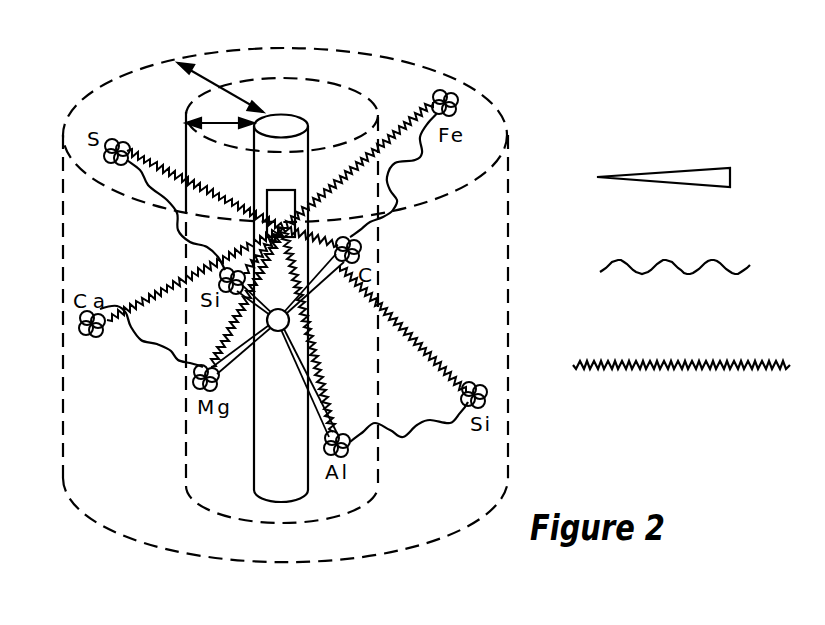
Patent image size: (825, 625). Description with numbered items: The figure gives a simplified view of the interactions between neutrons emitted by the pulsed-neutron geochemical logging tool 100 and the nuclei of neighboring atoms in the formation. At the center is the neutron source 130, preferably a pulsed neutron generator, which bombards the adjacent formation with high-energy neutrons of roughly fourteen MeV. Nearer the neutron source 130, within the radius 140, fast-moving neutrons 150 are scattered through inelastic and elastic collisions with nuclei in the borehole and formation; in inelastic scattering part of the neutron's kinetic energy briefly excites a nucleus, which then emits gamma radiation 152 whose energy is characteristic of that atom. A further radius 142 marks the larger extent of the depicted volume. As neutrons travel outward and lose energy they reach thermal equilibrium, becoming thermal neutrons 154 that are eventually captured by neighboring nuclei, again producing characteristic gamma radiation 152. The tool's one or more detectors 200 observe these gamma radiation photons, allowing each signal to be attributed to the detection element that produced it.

The tool 100 is at (302, 103).
The neutron source 130 is at (290, 319).
The radius 140 is at (223, 121).
The outer radius 142 is at (217, 86).
The detectors 200 is at (283, 193).
The fast-moving neutrons 150 is at (680, 195).
The gamma radiation 152 is at (682, 380).
The thermal neutrons 154 is at (674, 285).